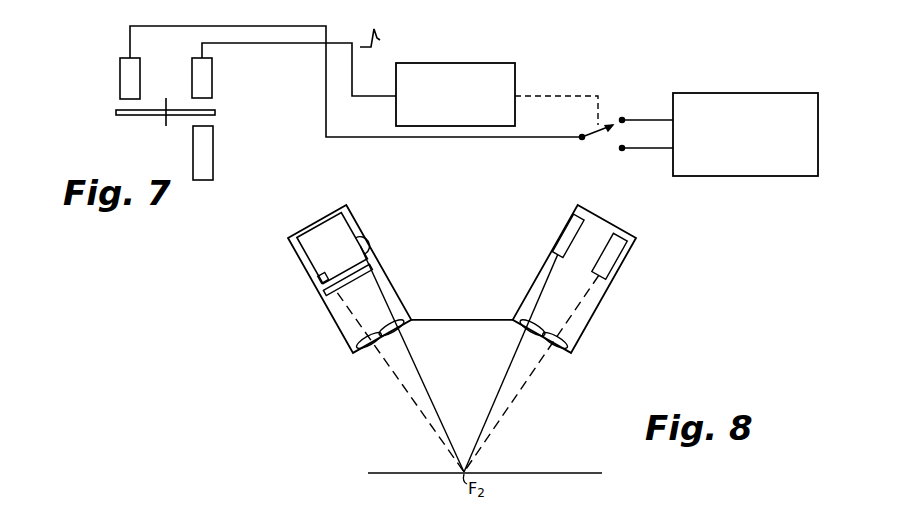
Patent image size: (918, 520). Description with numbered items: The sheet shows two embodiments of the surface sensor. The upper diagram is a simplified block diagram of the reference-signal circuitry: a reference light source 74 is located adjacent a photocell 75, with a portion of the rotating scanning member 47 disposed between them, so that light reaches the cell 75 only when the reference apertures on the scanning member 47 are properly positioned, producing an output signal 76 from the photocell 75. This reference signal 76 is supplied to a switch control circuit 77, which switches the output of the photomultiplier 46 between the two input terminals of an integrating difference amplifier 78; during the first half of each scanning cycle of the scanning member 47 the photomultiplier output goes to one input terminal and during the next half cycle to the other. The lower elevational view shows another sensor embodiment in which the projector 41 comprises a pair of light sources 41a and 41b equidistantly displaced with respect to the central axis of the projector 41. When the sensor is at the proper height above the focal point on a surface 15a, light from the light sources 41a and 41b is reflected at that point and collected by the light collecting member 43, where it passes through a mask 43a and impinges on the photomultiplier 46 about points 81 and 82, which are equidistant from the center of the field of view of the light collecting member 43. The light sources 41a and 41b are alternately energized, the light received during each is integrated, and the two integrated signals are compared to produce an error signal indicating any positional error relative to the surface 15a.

In FIG. 8, the surface 15a is at (558, 472).
In FIG. 8, the projector 41 is at (532, 268).
In FIG. 8, the light source 41a is at (562, 232).
In FIG. 8, the light source 41b is at (614, 272).
In FIG. 8, the light collecting member 43 is at (306, 233).
In FIG. 8, the mask 43a is at (374, 270).
In FIG. 7, the photomultiplier 46 is at (119, 63).
In FIG. 8, the photomultiplier 46 is at (350, 217).
In FIG. 7, the scanning member 47 is at (134, 116).
In FIG. 7, the reference light source 74 is at (213, 170).
In FIG. 7, the photocell 75 is at (212, 74).
In FIG. 7, the output signal 76 is at (378, 36).
In FIG. 7, the switch control circuit 77 is at (481, 63).
In FIG. 7, the integrating difference amplifier 78 is at (778, 92).
In FIG. 8, the point 81 is at (362, 246).
In FIG. 8, the point 82 is at (318, 275).